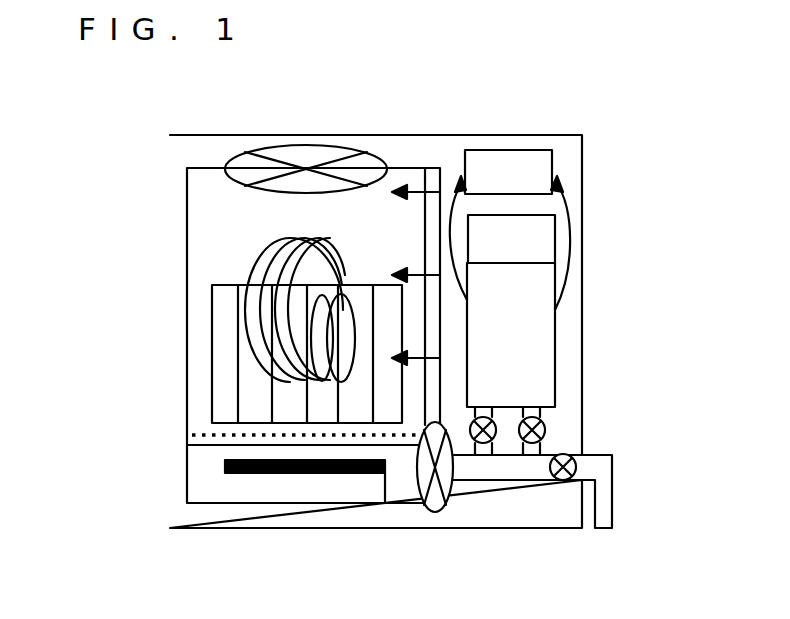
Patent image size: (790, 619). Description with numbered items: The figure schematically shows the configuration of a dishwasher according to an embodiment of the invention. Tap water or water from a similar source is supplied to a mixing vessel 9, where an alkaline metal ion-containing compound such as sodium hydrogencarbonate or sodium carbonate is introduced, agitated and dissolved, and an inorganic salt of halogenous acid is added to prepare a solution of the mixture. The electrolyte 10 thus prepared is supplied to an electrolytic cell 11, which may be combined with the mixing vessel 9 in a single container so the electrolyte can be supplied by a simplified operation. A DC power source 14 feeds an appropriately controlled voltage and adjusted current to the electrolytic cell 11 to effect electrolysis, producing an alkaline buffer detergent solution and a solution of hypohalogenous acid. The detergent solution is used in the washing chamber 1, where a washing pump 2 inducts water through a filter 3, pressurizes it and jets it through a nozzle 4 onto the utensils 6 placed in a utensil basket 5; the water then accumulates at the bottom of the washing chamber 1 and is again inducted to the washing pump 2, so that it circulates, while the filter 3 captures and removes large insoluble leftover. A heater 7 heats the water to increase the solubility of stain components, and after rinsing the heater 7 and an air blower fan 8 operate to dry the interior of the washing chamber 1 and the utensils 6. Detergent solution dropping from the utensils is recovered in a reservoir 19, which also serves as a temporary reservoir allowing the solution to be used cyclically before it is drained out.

The washing chamber 1 is at (187, 239).
The washing pump 2 is at (425, 505).
The filter 3 is at (187, 437).
The nozzle 4 is at (442, 187).
The utensil basket 5 is at (213, 377).
The utensils 6 is at (253, 302).
The heater 7 is at (260, 474).
The air blower fan 8 is at (187, 169).
The mixing vessel 9 is at (527, 238).
The electrolyte 10 is at (535, 317).
The electrolytic cell 11 is at (550, 350).
The DC power source 14 is at (530, 170).
The reservoir 19 is at (187, 468).